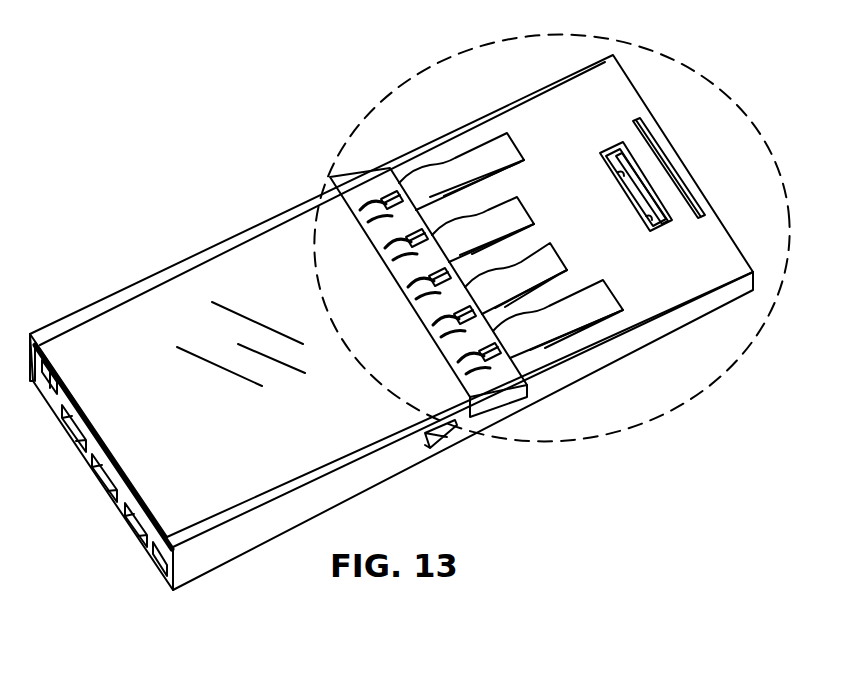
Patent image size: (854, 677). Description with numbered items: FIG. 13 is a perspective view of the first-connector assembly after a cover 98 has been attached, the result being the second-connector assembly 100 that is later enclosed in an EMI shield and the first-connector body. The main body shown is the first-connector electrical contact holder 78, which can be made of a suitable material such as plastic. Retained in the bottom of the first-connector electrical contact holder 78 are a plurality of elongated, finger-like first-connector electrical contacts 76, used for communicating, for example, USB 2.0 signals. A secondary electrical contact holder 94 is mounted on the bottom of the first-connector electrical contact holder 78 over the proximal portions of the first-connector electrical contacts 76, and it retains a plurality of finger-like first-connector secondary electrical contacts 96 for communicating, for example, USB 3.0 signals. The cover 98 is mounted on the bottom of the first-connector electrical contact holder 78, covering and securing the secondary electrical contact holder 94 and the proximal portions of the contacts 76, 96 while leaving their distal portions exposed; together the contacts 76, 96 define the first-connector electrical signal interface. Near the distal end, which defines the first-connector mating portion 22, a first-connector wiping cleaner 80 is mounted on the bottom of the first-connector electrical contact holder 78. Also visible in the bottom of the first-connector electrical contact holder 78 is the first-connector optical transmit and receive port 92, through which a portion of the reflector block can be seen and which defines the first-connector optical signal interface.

The second-connector assembly 100 is at (172, 106).
The first-connector electrical contact holder 78 is at (112, 300).
The cover 98 is at (246, 243).
The secondary electrical contact holder 94 is at (345, 185).
The first-connector secondary electrical contacts 96 is at (378, 203).
The first-connector electrical contacts 76 is at (505, 147).
The first-connector wiping cleaner 80 is at (655, 146).
The first-connector optical transmit and receive port 92 is at (635, 193).
The first-connector mating portion 22 is at (662, 422).